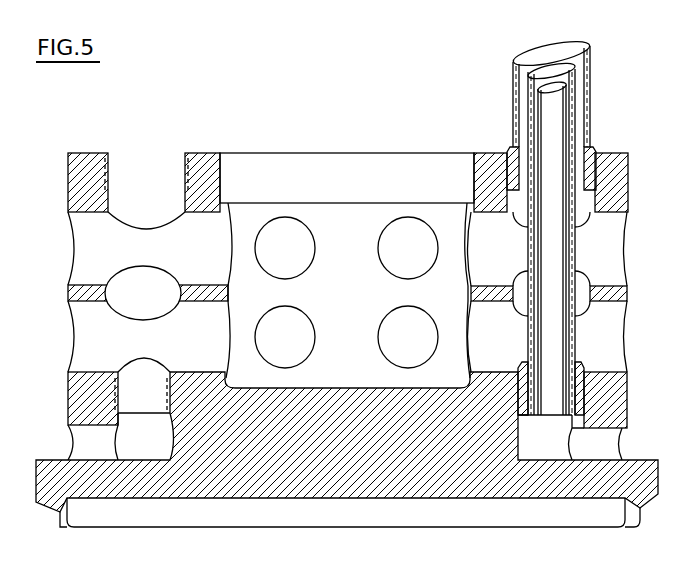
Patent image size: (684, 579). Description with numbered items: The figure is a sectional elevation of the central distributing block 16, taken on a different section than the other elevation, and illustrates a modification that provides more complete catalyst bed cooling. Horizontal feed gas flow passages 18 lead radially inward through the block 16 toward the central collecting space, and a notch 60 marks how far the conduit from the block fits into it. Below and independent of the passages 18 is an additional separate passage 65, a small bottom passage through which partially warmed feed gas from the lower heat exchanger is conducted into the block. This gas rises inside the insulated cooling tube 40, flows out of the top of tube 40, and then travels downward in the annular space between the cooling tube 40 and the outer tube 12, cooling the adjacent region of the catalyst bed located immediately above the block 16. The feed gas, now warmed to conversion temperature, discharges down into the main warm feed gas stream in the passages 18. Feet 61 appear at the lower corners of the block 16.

The outer tube 12 is at (586, 115).
The central distributing block 16 is at (292, 498).
The horizontal feed gas flow passages 18 is at (382, 268).
The insulated cooling tube 40 is at (528, 233).
The notch 60 is at (228, 203).
The feet 61 is at (60, 511).
The solid circles (additional separate passage) 65 is at (135, 163).